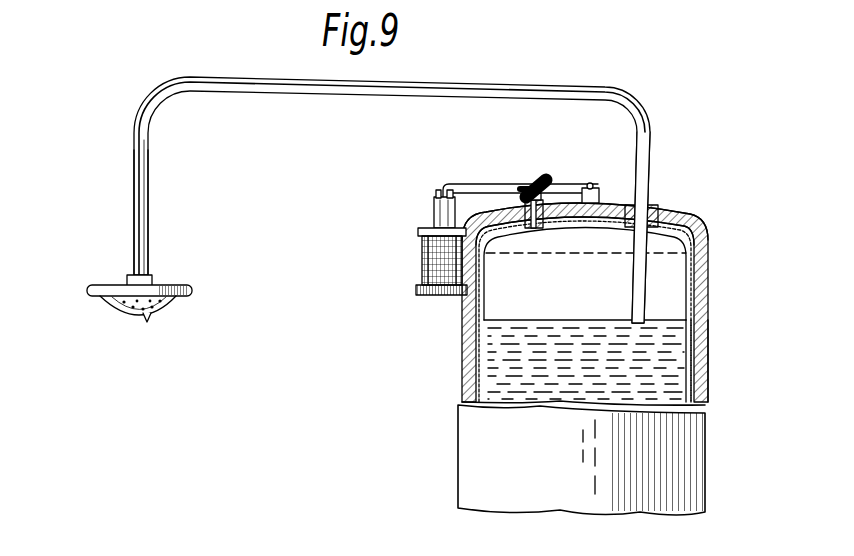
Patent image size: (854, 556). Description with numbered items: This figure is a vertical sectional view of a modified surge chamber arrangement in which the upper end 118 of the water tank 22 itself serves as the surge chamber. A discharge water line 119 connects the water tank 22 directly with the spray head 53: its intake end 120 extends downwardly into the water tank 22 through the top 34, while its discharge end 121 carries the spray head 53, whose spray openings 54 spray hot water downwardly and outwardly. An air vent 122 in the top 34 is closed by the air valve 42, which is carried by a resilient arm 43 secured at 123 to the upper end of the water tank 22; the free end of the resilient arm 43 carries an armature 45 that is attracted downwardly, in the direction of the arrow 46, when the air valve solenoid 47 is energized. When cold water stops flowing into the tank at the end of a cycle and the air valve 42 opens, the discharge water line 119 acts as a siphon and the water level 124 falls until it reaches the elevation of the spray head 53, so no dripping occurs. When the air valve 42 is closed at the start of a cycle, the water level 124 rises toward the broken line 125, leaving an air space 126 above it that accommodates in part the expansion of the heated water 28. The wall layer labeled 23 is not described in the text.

The discharge water line 119 is at (552, 90).
The discharge end of discharge water line 121 is at (138, 249).
The spray head 53 is at (149, 286).
The spray openings 54 is at (148, 319).
The arrow 46 is at (481, 222).
The resilient arm 43 is at (481, 184).
The air valve 42 is at (531, 181).
The armature 45 is at (433, 211).
The air valve solenoid 47 is at (420, 260).
The air vent 122 is at (548, 187).
The securing point of resilient arm 123 is at (606, 170).
The top of water tank 34 is at (618, 206).
The air space 126 is at (662, 243).
The broken line 125 is at (700, 236).
The upper end of water tank 118 is at (677, 267).
The intake end of discharge water line 120 is at (632, 277).
The water level 124 is at (560, 320).
The inner wall 23 is at (703, 343).
The water tank 22 is at (703, 375).
The water 28 is at (657, 407).